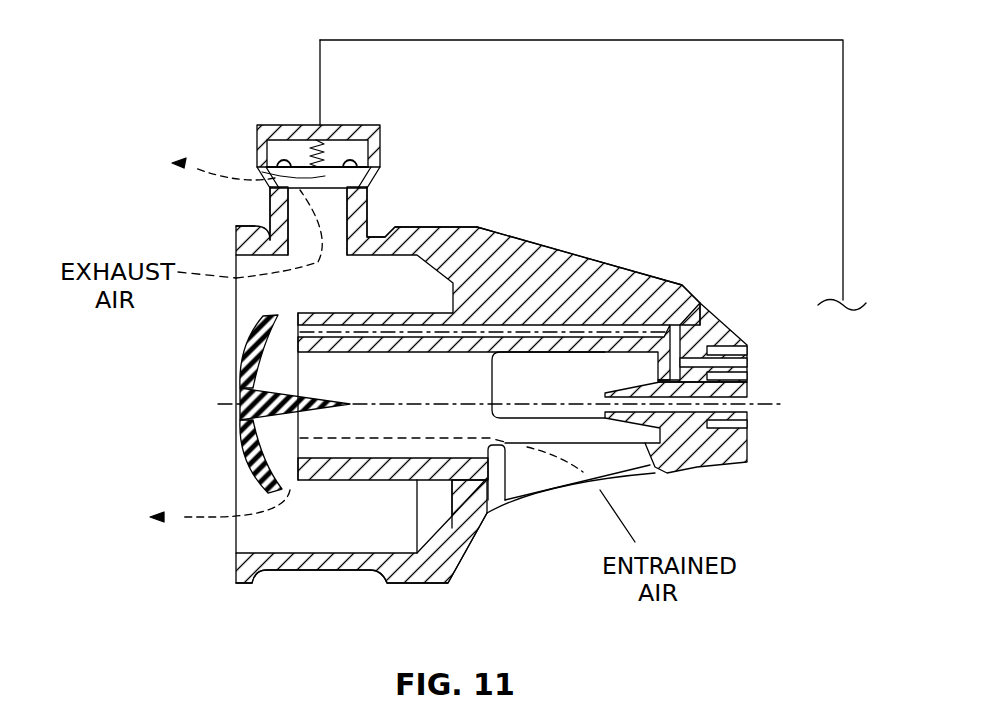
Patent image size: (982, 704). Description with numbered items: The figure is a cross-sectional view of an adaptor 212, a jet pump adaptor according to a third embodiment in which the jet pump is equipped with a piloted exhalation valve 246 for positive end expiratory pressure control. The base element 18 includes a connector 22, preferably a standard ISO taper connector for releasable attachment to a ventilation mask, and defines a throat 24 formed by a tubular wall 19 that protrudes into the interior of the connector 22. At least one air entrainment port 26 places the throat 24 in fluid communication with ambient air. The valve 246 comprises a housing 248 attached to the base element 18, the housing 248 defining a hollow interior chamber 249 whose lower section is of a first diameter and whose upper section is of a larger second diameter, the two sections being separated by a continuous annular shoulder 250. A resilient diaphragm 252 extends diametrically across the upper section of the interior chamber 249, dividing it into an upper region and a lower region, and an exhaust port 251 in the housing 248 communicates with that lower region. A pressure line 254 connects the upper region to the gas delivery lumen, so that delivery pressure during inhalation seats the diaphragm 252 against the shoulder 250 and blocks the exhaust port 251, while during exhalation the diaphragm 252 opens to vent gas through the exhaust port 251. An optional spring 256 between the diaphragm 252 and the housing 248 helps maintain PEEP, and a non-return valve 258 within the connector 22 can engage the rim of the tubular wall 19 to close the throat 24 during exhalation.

The base element 18 is at (646, 262).
The tubular wall 19 is at (300, 447).
The connector 22 is at (282, 566).
The throat 24 is at (392, 443).
The air entrainment port 26 is at (545, 472).
The adaptor 212 is at (727, 263).
The piloted exhalation valve 246 is at (369, 123).
The housing 248 is at (377, 150).
The interior chamber 249 is at (335, 204).
The annular shoulder 250 is at (283, 160).
The exhaust port 251 is at (265, 180).
The diaphragm 252 is at (347, 148).
The pressure line 254 is at (560, 40).
The spring 256 is at (310, 145).
The non-return valve 258 is at (265, 341).